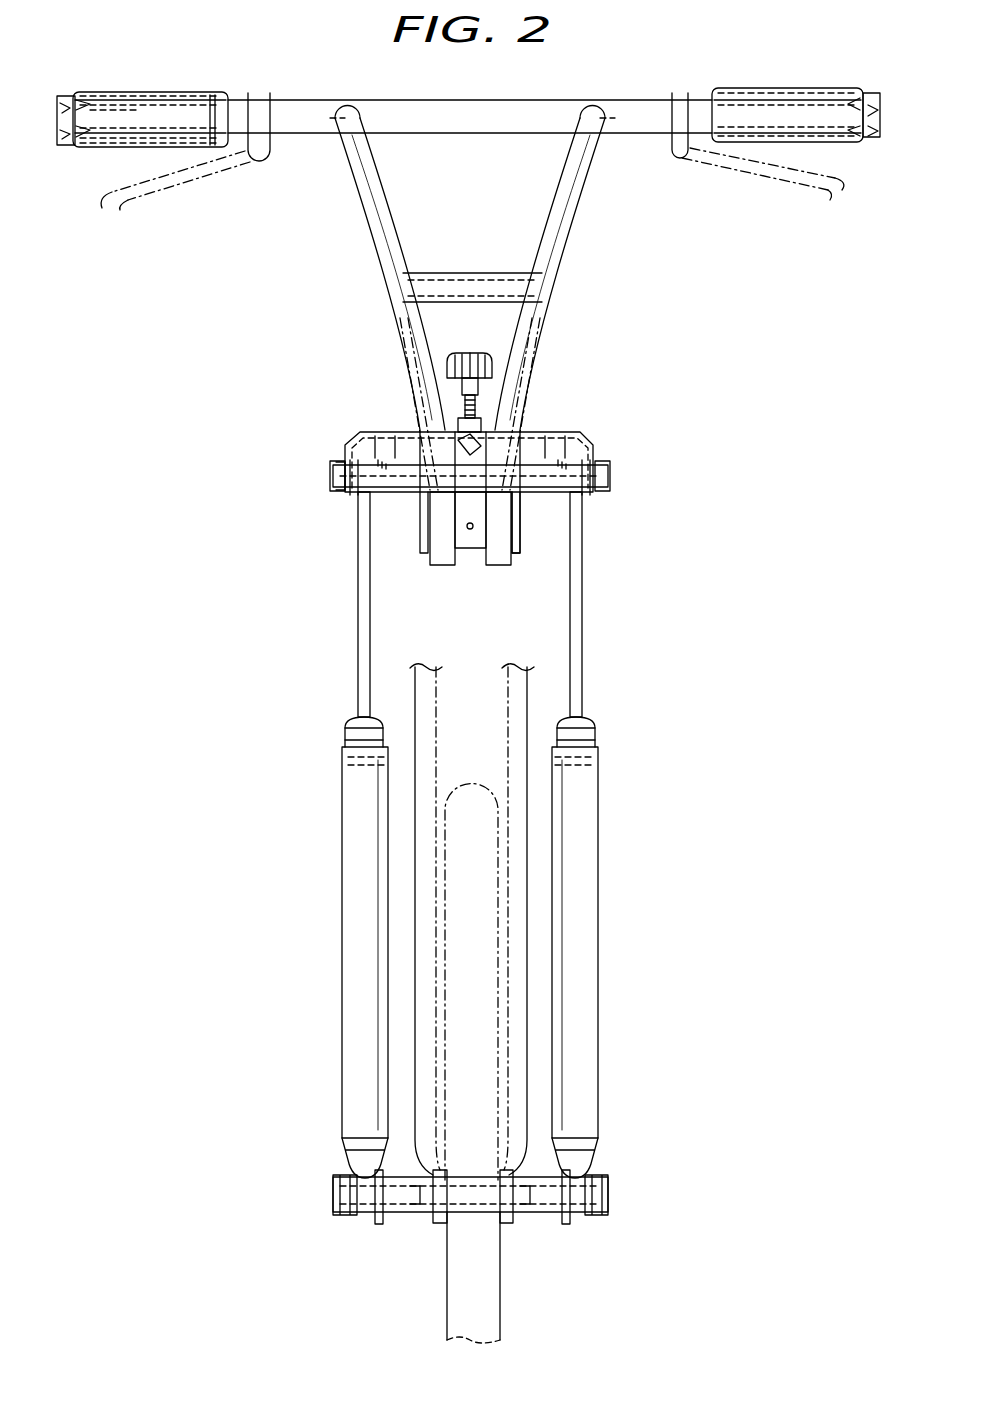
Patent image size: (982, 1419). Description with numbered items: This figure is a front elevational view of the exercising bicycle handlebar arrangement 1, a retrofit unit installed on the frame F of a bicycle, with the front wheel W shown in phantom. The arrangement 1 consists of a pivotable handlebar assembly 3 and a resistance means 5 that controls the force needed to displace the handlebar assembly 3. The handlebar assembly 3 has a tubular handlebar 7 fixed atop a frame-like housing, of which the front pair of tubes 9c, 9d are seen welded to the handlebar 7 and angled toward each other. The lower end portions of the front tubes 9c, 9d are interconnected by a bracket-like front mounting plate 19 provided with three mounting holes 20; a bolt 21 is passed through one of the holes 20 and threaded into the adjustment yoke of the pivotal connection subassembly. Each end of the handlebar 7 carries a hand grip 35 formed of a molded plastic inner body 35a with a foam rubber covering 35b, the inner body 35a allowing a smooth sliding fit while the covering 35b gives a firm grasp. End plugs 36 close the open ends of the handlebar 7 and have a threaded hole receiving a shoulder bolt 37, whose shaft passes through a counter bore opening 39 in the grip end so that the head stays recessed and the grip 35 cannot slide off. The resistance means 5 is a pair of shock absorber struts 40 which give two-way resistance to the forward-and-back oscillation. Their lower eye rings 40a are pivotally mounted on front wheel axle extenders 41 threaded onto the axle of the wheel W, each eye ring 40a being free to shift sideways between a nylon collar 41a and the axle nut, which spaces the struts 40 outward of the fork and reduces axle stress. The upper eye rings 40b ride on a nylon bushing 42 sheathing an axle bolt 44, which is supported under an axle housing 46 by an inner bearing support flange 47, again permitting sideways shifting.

The exercising bicycle handlebar arrangement 1 is at (620, 542).
The pivotable handlebar assembly 3 is at (473, 329).
The resistance means 5 is at (481, 935).
The handlebar 7 is at (492, 135).
The front tube 9c is at (562, 246).
The front tube 9d is at (375, 212).
The bracket-like front mounting plate 19 is at (430, 560).
The mounting hole 20 is at (470, 531).
The bolt 21 is at (455, 438).
The hand grip 35 is at (151, 92).
The molded plastic inner body 35a is at (118, 95).
The foam rubber covering 35b is at (218, 95).
The end plug 36 is at (92, 142).
The shoulder bolt 37 is at (100, 100).
The counter bore opening 39 is at (60, 120).
The shock absorber strut 40 is at (350, 905).
The lower eye ring 40a is at (368, 1222).
The upper eye ring 40b is at (372, 494).
The front wheel axle extender 41 is at (473, 1245).
The nylon collar 41a is at (404, 1216).
The nylon bushing 42 is at (522, 497).
The axle bolt 44 is at (610, 472).
The axle housing 46 is at (590, 432).
The inner bearing support flange 47 is at (345, 482).
The frame F is at (420, 697).
The front wheel W is at (505, 1262).